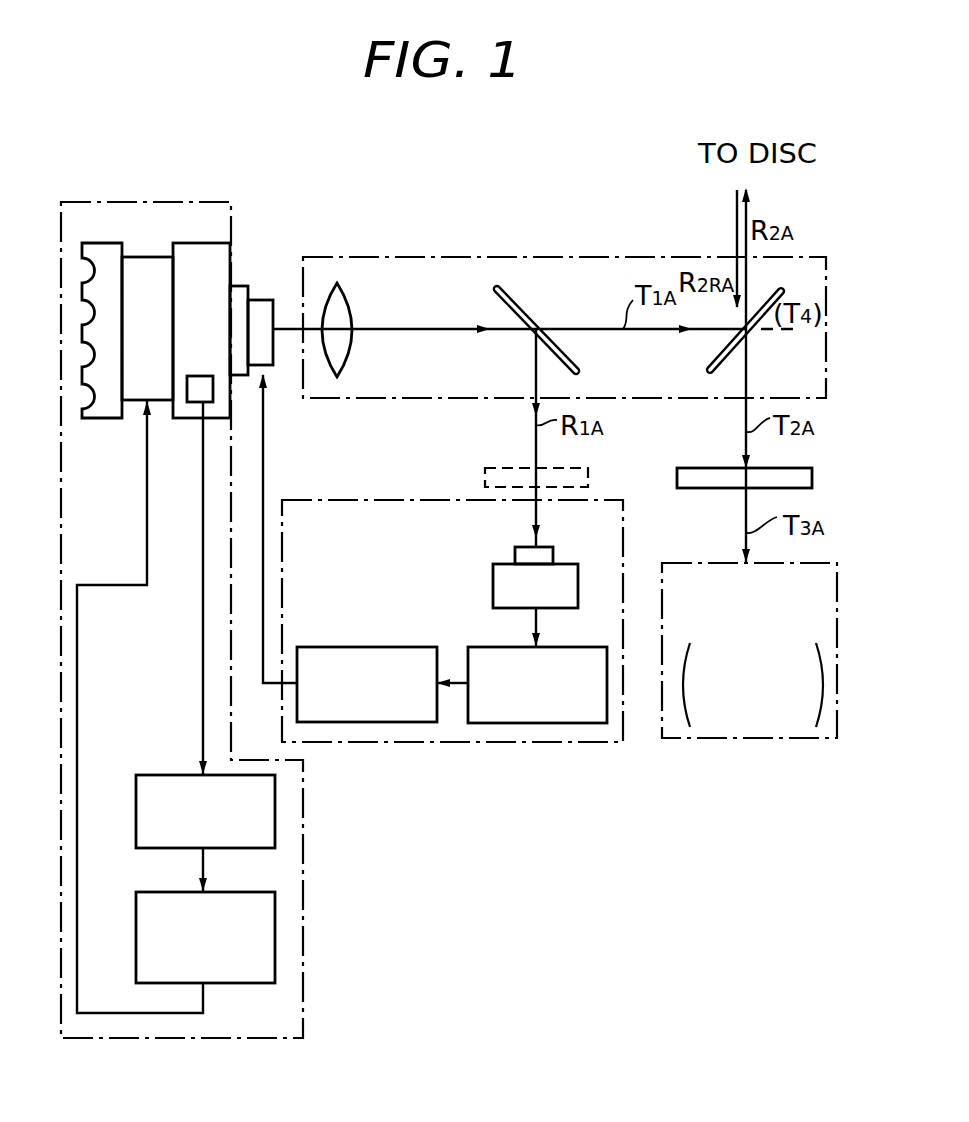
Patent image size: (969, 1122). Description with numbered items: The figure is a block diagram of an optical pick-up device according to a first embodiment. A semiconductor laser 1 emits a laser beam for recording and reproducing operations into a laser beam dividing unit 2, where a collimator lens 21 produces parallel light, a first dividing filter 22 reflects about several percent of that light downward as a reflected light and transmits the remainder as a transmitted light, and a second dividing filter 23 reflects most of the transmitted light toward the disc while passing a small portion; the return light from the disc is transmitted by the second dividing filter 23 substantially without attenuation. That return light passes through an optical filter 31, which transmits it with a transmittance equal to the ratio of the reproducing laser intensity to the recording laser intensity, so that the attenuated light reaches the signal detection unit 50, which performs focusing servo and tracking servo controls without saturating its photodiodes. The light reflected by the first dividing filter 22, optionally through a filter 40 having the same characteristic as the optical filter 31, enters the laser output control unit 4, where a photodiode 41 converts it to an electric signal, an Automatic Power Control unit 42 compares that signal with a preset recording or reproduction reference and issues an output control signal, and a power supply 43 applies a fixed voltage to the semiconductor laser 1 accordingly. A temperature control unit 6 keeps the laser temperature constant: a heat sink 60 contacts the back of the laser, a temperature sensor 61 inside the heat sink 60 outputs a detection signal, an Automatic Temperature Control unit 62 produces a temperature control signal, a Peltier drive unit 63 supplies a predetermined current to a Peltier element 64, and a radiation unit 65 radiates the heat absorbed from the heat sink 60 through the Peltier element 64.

The semiconductor laser 1 is at (250, 292).
The laser beam dividing unit 2 is at (617, 257).
The laser output control unit 4 is at (387, 500).
The temperature control unit 6 is at (303, 903).
The collimator lens 21 is at (345, 288).
The first dividing filter 22 is at (523, 300).
The second dividing filter 23 is at (783, 289).
The optical filter 31 is at (800, 468).
The filter 40 is at (592, 476).
The photodiode 41 is at (553, 553).
The Automatic Power Control unit 42 is at (550, 724).
The power supply 43 is at (387, 723).
The signal detection unit 50 is at (762, 739).
The heat sink 60 is at (207, 243).
The temperature sensor 61 is at (190, 403).
The Automatic Temperature Control unit 62 is at (147, 775).
The Peltier drive unit 63 is at (140, 892).
The Peltier element 64 is at (148, 257).
The radiation unit 65 is at (98, 243).